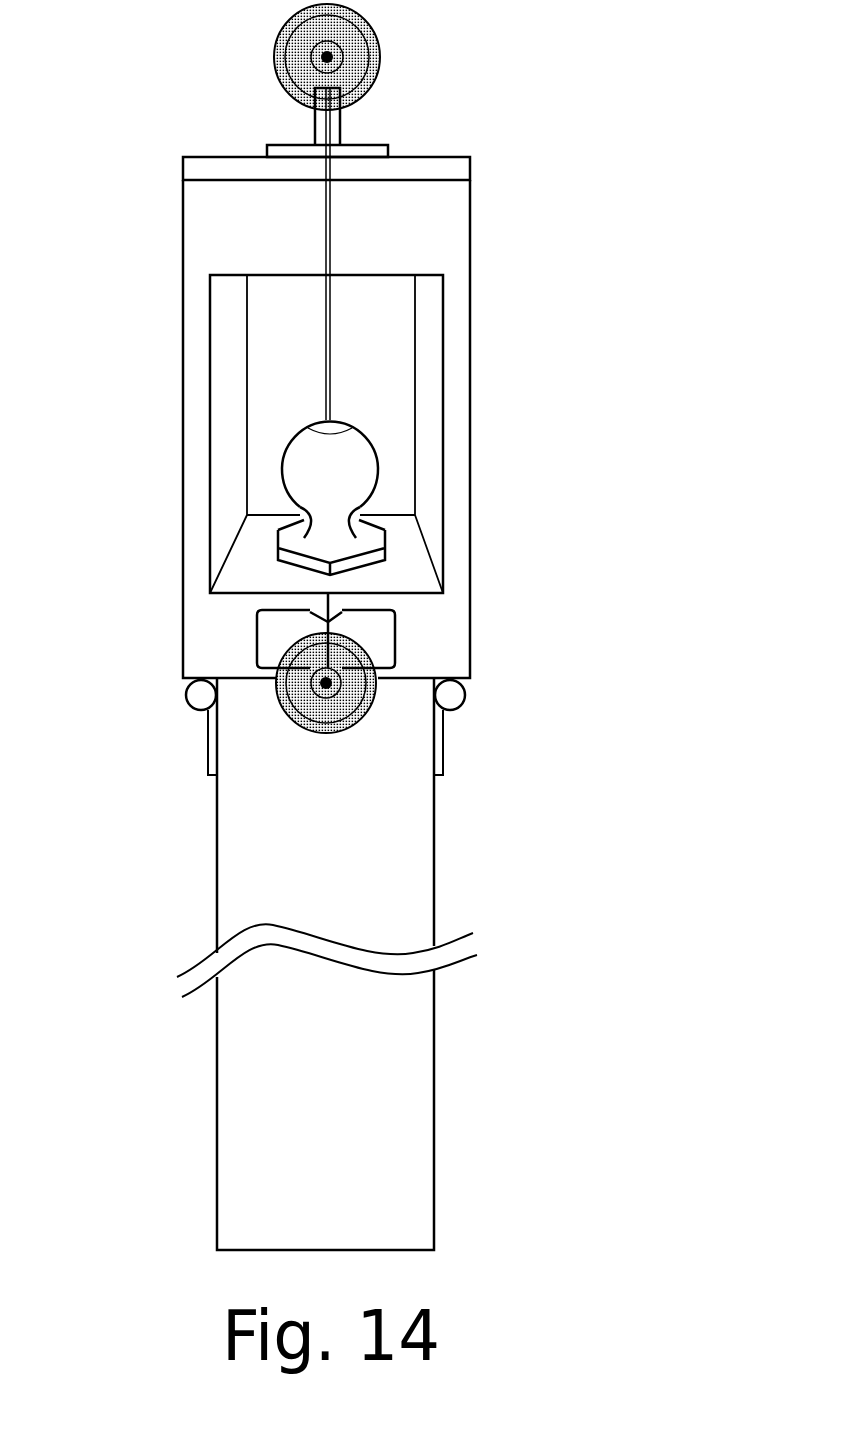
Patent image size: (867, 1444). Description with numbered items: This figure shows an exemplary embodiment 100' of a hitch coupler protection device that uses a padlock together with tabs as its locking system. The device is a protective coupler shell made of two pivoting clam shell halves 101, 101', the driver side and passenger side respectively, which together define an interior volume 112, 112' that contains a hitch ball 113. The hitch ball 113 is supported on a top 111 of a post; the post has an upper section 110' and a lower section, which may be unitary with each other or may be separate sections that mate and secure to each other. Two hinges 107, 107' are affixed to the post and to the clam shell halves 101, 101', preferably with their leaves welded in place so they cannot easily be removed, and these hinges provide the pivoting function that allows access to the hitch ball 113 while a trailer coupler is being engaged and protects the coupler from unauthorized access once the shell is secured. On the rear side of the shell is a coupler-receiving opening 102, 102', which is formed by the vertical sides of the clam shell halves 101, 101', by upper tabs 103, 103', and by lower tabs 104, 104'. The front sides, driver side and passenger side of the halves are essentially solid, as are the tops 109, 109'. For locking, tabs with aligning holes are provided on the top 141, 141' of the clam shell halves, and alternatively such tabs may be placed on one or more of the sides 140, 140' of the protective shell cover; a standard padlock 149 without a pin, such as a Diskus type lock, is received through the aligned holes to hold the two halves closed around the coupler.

The protective coupler shell embodiment 100' is at (650, 91).
The clam shell half 101 is at (174, 429).
The clam shell half 101' is at (484, 429).
The coupler-receiving opening 102 is at (207, 434).
The coupler-receiving opening 102' is at (446, 434).
The upper tab 103 is at (257, 225).
The upper tab 103' is at (393, 225).
The lower tab 104 is at (127, 615).
The lower tab 104' is at (531, 628).
The hinge 107 is at (153, 716).
The hinge 107' is at (503, 727).
The top 109 is at (217, 156).
The top 109' is at (448, 180).
The upper section of post 110' is at (327, 837).
The top of post 111 is at (228, 532).
The interior volume 112 is at (261, 434).
The interior volume 112' is at (394, 434).
The hitch ball 113 is at (440, 486).
The side of protective shell cover 140 is at (212, 610).
The side of protective shell cover 140' is at (447, 613).
The top tab 141 is at (253, 122).
The top tab 141' is at (408, 122).
The padlock 149 is at (238, 393).